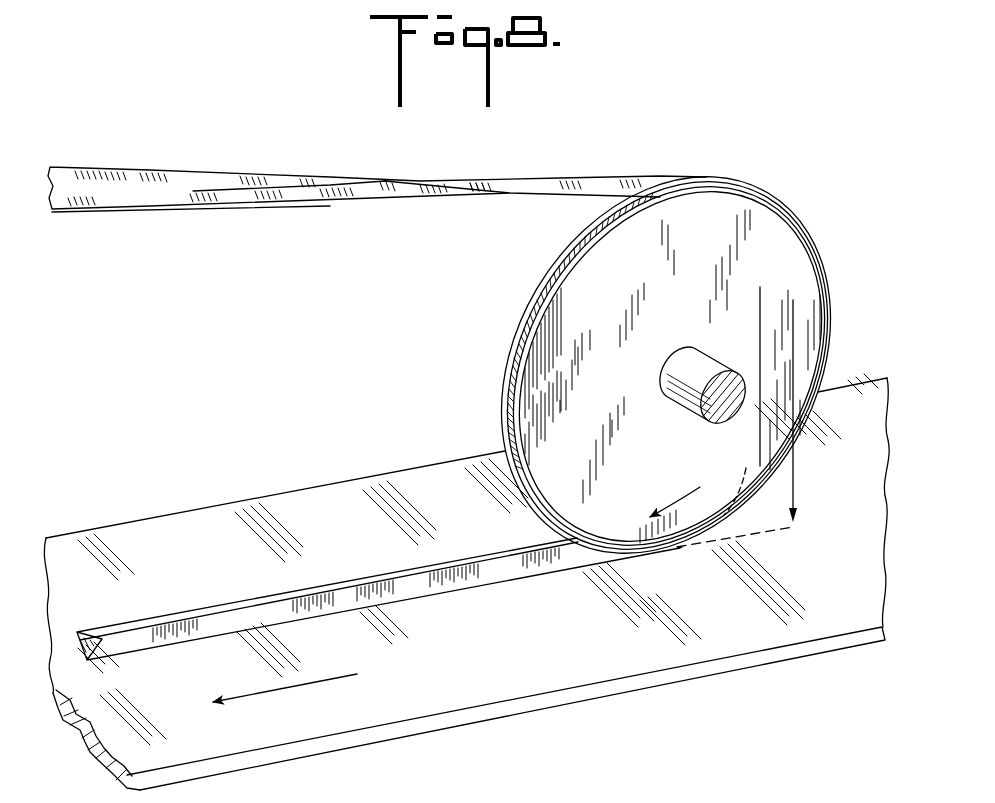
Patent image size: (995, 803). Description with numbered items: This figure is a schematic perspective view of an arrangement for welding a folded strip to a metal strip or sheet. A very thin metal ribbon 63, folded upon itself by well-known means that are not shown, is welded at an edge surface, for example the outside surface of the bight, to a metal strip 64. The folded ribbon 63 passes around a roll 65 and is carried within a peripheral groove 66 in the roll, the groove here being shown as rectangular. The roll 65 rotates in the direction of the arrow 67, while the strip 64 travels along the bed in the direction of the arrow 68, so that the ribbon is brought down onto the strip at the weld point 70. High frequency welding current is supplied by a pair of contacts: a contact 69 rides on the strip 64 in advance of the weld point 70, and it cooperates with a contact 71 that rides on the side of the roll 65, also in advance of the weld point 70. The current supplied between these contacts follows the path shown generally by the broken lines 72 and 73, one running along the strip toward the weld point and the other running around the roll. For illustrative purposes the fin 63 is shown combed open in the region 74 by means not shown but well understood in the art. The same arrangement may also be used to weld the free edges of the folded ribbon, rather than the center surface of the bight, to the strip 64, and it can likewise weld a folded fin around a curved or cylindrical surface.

The metal ribbon 63 is at (170, 212).
The metal strip 64 is at (596, 645).
The roll 65 is at (692, 308).
The peripheral groove 66 is at (512, 346).
The arrow 67 is at (680, 493).
The arrow 68 is at (357, 673).
The contact 69 is at (798, 517).
The weld point 70 is at (681, 548).
The contact 71 is at (745, 464).
The broken line 72 is at (747, 537).
The broken line 73 is at (728, 510).
The region 74 is at (162, 613).